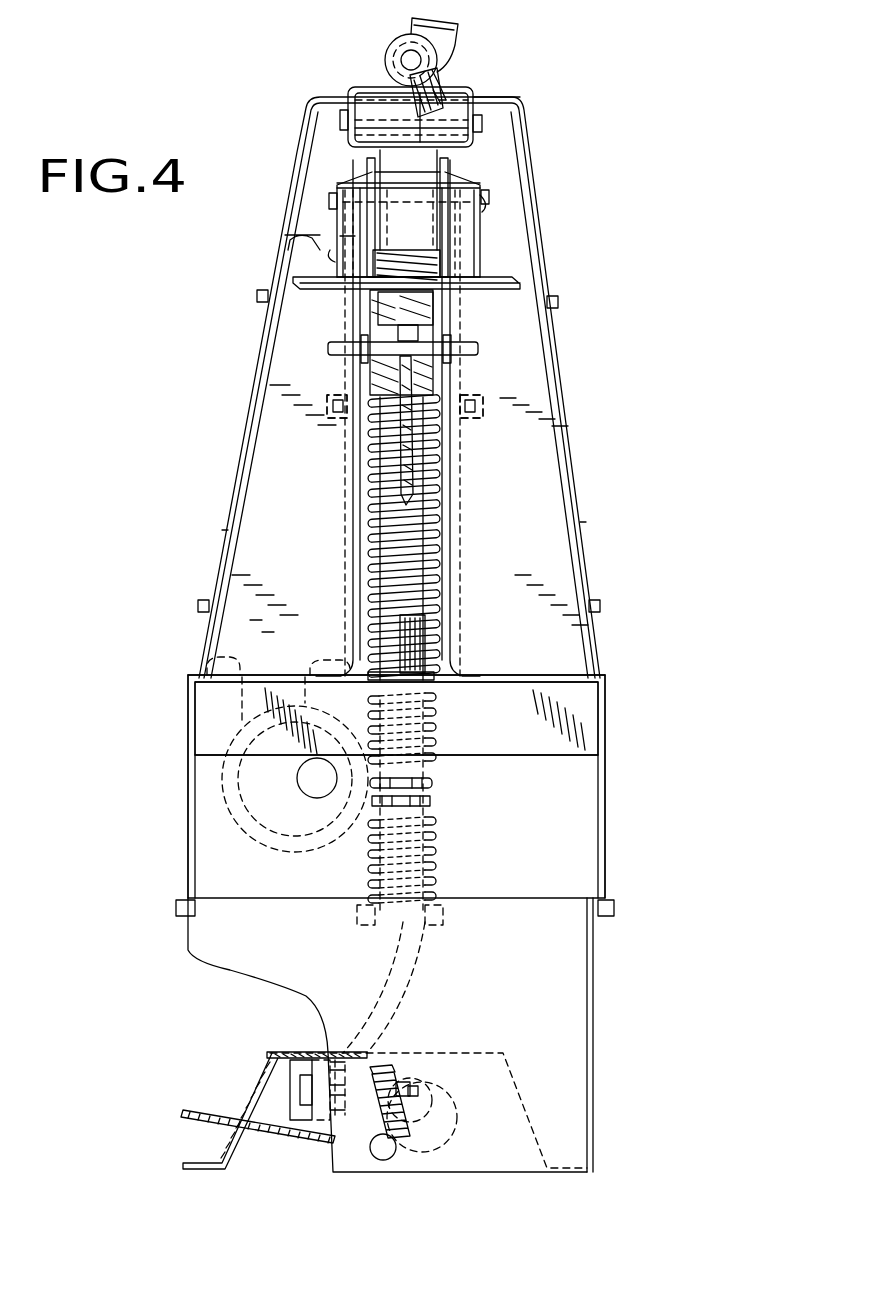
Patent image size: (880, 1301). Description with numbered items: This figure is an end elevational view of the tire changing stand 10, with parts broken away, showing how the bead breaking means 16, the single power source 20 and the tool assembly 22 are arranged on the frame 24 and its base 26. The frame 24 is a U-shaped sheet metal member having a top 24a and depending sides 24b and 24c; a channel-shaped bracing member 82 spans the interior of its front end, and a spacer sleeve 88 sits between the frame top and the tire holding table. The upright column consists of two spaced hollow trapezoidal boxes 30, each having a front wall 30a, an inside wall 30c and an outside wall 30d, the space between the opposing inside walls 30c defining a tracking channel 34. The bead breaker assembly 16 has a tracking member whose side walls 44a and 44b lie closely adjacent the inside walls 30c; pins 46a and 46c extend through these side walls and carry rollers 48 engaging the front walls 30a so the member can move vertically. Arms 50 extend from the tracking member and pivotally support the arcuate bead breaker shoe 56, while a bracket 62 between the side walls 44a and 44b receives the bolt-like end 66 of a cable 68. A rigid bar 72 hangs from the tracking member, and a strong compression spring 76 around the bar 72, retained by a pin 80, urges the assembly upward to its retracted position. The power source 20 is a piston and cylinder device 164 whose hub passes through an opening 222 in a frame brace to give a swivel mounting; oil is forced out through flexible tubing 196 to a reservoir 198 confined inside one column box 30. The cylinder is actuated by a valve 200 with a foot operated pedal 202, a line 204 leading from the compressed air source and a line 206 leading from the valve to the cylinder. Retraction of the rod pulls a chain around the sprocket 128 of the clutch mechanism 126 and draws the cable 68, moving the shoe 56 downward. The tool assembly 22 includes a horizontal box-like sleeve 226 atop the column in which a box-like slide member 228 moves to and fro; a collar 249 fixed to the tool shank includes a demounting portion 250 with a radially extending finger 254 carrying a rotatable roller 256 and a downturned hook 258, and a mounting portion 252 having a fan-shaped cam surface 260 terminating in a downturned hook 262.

The tire changing stand 10 is at (568, 128).
The bead breaking means 16 is at (505, 255).
The single power source 20 is at (272, 850).
The tool assembly 22 is at (493, 72).
The frame 24 is at (505, 675).
The top 24a is at (555, 680).
The depending side 24b is at (188, 822).
The depending side 24c is at (606, 822).
The base 26 is at (252, 380).
The hollow trapezoidal box 30 is at (278, 445).
The front wall 30a is at (300, 510).
The inside wall 30c is at (352, 546).
The outside wall 30d is at (222, 530).
The tracking channel 34 is at (440, 560).
The side wall 44a is at (345, 376).
The side wall 44b is at (462, 381).
The pin 46a is at (490, 203).
The pin 46c is at (478, 350).
The rollers 48 is at (350, 185).
The arms 50 is at (388, 168).
The arcuate bead breaker shoe 56 is at (320, 290).
The bracket 62 is at (434, 310).
The bolt-like end 66 is at (434, 336).
The cable 68 is at (418, 486).
The rigid member 72 is at (375, 926).
The compression spring 76 is at (440, 588).
The pin 80 is at (440, 925).
The channel-shaped bracing member 82 is at (520, 744).
The spacer sleeve 88 is at (425, 650).
The clutch mechanism 126 is at (443, 803).
The sprocket 128 is at (438, 783).
The piston and cylinder device 164 is at (238, 790).
The flexible tubing 196 is at (242, 706).
The reservoir 198 is at (215, 655).
The valve 200 is at (460, 1054).
The foot operated pedal 202 is at (215, 1082).
The line 204 is at (448, 1130).
The line 206 is at (385, 992).
The opening 222 is at (313, 792).
The box-like sleeve 226 is at (477, 96).
The box-like slide member 228 is at (348, 90).
The collar 249 is at (386, 50).
The demounting portion 250 is at (445, 70).
The mounting portion 252 is at (455, 62).
The finger 254 is at (437, 80).
The rotatable roller 256 is at (423, 90).
The downturned hook 258 is at (440, 117).
The fan-shaped cam surface 260 is at (413, 34).
The downturned hook 262 is at (436, 20).